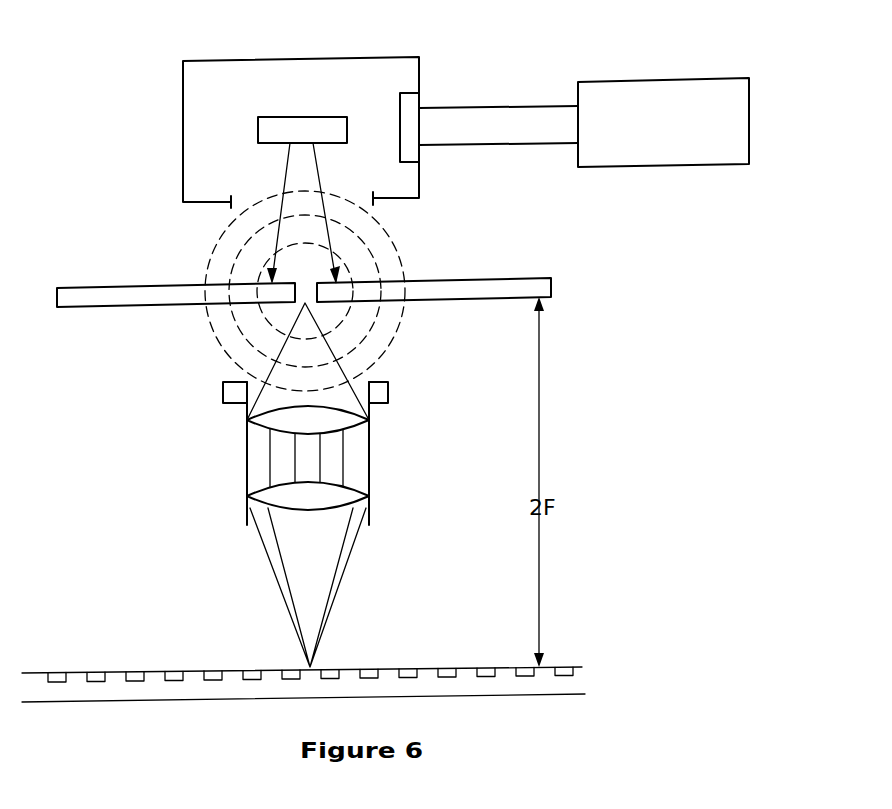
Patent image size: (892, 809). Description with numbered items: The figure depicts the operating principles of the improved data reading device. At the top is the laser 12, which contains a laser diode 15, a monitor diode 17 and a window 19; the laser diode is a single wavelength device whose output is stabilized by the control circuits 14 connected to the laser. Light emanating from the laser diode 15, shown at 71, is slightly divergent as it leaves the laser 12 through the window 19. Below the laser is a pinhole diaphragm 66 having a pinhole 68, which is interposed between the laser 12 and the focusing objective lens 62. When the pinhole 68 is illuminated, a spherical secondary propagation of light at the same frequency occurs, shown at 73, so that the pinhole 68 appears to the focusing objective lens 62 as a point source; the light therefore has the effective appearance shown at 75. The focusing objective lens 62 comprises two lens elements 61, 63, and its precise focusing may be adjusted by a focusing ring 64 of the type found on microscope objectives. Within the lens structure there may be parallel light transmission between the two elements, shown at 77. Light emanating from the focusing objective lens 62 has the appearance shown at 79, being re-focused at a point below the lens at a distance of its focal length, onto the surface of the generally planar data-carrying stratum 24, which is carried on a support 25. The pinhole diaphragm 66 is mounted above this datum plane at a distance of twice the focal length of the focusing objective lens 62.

The laser 12 is at (208, 116).
The control circuits 14 is at (622, 100).
The laser diode 15 is at (305, 120).
The monitor diode 17 is at (403, 105).
The window 19 is at (249, 188).
The data-carrying stratum 24 is at (118, 672).
The support 25 is at (240, 698).
The lens element 61 is at (342, 421).
The focusing objective lens 62 is at (291, 414).
The lens element 63 is at (340, 497).
The focusing ring 64 is at (227, 393).
The pinhole diaphragm 66 is at (450, 280).
The pinhole 68 is at (305, 280).
The light emanating from the laser diode 71 is at (320, 177).
The secondary propagation of light 73 is at (227, 335).
The effective appearance of light 75 is at (330, 378).
The parallel light transmission 77 is at (333, 458).
The light emanating from the focusing objective lens 79 is at (322, 580).